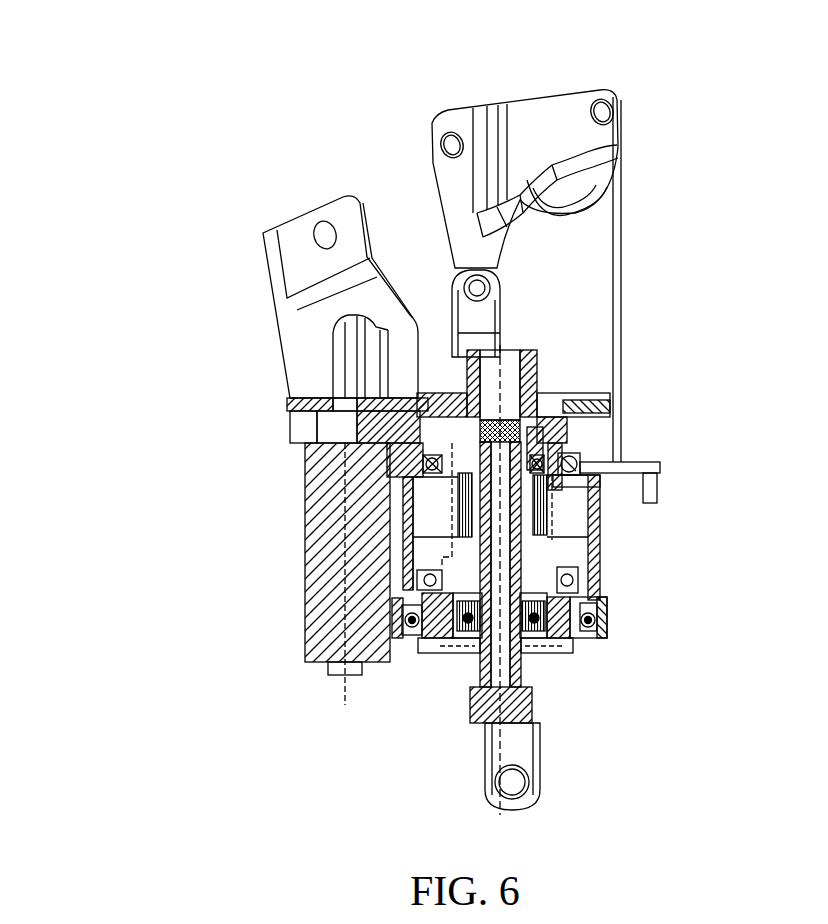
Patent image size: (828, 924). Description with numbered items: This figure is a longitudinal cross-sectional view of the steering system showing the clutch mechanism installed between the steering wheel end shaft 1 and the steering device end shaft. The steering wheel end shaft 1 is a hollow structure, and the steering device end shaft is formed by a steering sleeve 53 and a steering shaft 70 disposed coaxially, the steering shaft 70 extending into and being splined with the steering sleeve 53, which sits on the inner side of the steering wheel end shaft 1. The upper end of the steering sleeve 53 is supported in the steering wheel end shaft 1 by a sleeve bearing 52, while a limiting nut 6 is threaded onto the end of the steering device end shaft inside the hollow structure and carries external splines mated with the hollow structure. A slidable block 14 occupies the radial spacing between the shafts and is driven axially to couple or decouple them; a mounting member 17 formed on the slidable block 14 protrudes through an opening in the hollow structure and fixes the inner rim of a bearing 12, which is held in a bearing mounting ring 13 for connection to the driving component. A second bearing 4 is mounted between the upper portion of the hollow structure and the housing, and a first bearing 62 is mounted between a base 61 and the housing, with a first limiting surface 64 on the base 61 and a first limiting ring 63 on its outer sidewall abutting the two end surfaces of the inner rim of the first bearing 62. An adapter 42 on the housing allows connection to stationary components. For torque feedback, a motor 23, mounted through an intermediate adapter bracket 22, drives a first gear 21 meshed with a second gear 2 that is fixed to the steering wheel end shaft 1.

The steering wheel end shaft 1 is at (507, 360).
The second gear 2 is at (588, 405).
The second bearing 4 is at (600, 462).
The limiting nut 6 is at (535, 440).
The bearing 12 is at (593, 642).
The bearing mounting ring 13 is at (595, 640).
The slidable block 14 is at (600, 597).
The mounting member 17 is at (447, 585).
The first gear 21 is at (290, 400).
The intermediate adapter bracket 22 is at (310, 258).
The motor 23 is at (305, 525).
The adapter 42 is at (620, 100).
The sleeve bearing 52 is at (563, 447).
The steering sleeve 53 is at (527, 539).
The base 61 is at (478, 641).
The first bearing 62 is at (405, 624).
The first limiting ring 63 is at (418, 645).
The first limiting surface 64 is at (580, 638).
The steering shaft 70 is at (488, 740).